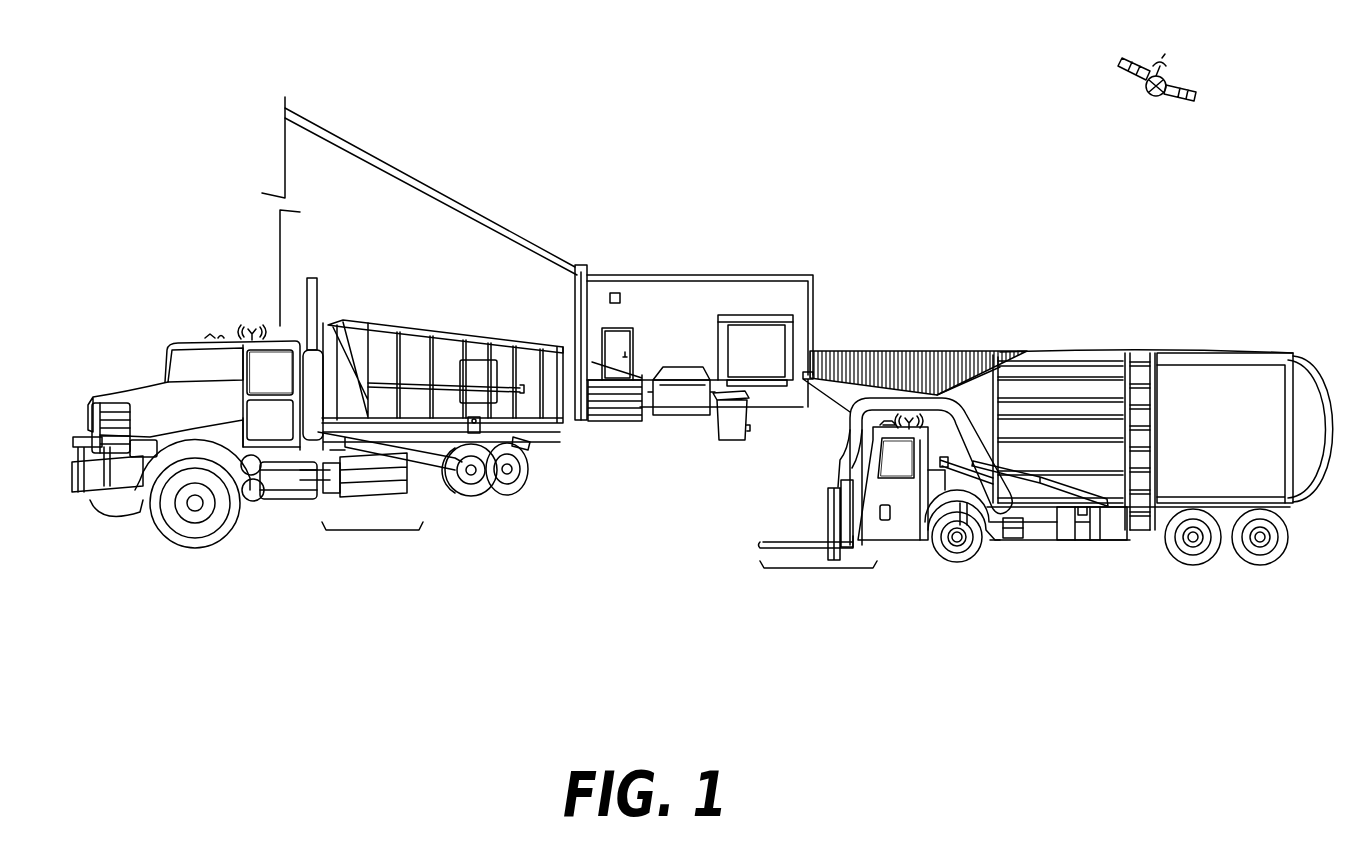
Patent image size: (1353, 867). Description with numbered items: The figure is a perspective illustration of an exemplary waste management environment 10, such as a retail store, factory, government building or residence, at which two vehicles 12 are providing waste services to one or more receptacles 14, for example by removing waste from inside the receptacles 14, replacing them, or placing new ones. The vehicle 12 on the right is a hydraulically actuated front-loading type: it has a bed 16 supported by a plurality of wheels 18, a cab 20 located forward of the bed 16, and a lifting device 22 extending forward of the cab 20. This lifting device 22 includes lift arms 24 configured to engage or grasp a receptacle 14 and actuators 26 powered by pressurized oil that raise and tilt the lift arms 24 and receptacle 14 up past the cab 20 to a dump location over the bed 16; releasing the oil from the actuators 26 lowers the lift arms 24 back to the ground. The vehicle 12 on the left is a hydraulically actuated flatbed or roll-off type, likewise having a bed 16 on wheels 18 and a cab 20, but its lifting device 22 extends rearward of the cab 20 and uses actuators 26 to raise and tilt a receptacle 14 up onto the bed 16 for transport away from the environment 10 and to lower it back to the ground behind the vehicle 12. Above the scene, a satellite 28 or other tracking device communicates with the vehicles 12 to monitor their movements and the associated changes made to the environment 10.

The waste management environment 10 is at (717, 239).
The vehicle 12 is at (340, 284).
The receptacle 14 is at (427, 374).
The bed 16 is at (1234, 456).
The wheels 18 is at (211, 543).
The cab 20 is at (282, 379).
The lifting device 22 is at (372, 531).
The lift arms 24 is at (848, 455).
The actuators 26 is at (366, 450).
The satellite 28 is at (1145, 92).